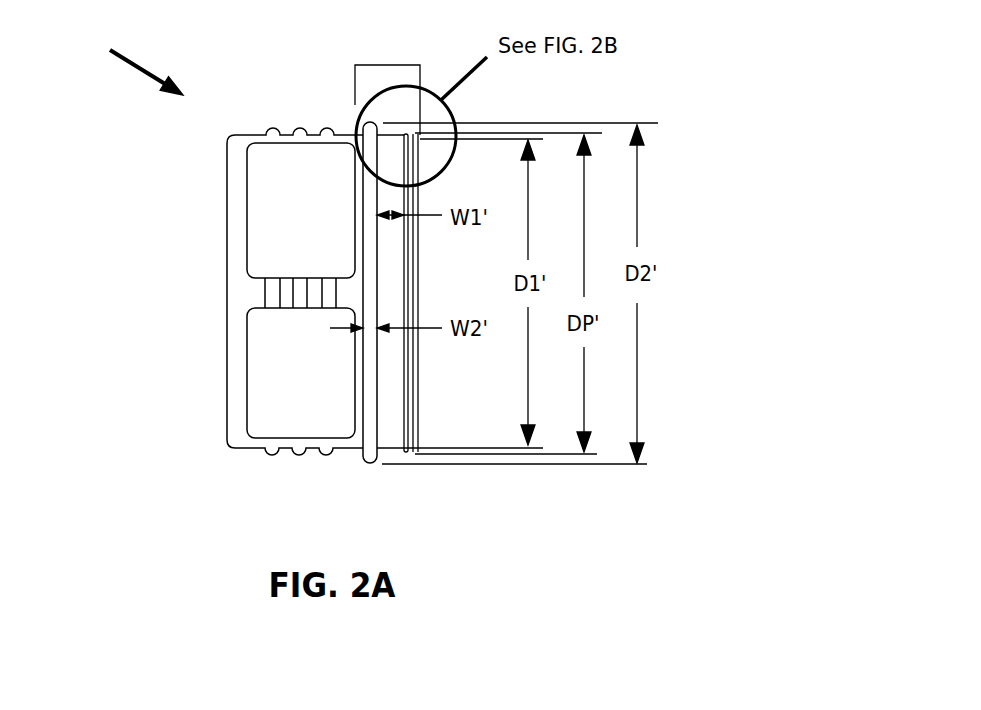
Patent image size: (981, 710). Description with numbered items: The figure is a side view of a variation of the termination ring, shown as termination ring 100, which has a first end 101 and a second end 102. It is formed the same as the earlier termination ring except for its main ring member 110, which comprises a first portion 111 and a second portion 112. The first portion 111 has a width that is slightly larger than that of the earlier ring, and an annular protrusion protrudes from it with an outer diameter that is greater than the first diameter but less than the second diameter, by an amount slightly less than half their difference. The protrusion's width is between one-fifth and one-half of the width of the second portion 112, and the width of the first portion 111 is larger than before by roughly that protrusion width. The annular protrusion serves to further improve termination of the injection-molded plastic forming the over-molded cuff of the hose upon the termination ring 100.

The termination ring 100 is at (125, 62).
The first end 101 is at (418, 465).
The second end 102 is at (226, 455).
The main ring member 110 is at (385, 65).
The first portion 111 is at (387, 283).
The second portion 112 is at (372, 418).